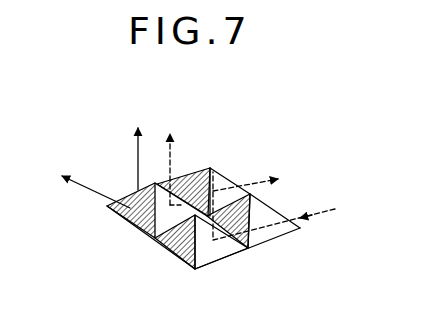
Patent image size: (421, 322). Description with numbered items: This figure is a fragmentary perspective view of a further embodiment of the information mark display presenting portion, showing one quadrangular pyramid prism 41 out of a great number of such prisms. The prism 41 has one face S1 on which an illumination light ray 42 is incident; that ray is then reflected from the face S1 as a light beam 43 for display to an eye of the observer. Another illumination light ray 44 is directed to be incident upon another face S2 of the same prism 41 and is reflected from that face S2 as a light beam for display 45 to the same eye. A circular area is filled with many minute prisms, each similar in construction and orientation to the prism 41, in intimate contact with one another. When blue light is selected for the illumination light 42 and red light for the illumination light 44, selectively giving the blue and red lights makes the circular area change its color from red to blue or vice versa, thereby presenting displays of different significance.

The quadrangular pyramid prism 41 is at (203, 240).
The illumination light ray 42 is at (110, 204).
The light beam for display 43 is at (182, 168).
The illumination light ray 44 is at (285, 206).
The light beam for display 45 is at (211, 165).
The face S1 is at (162, 249).
The face S2 is at (210, 252).